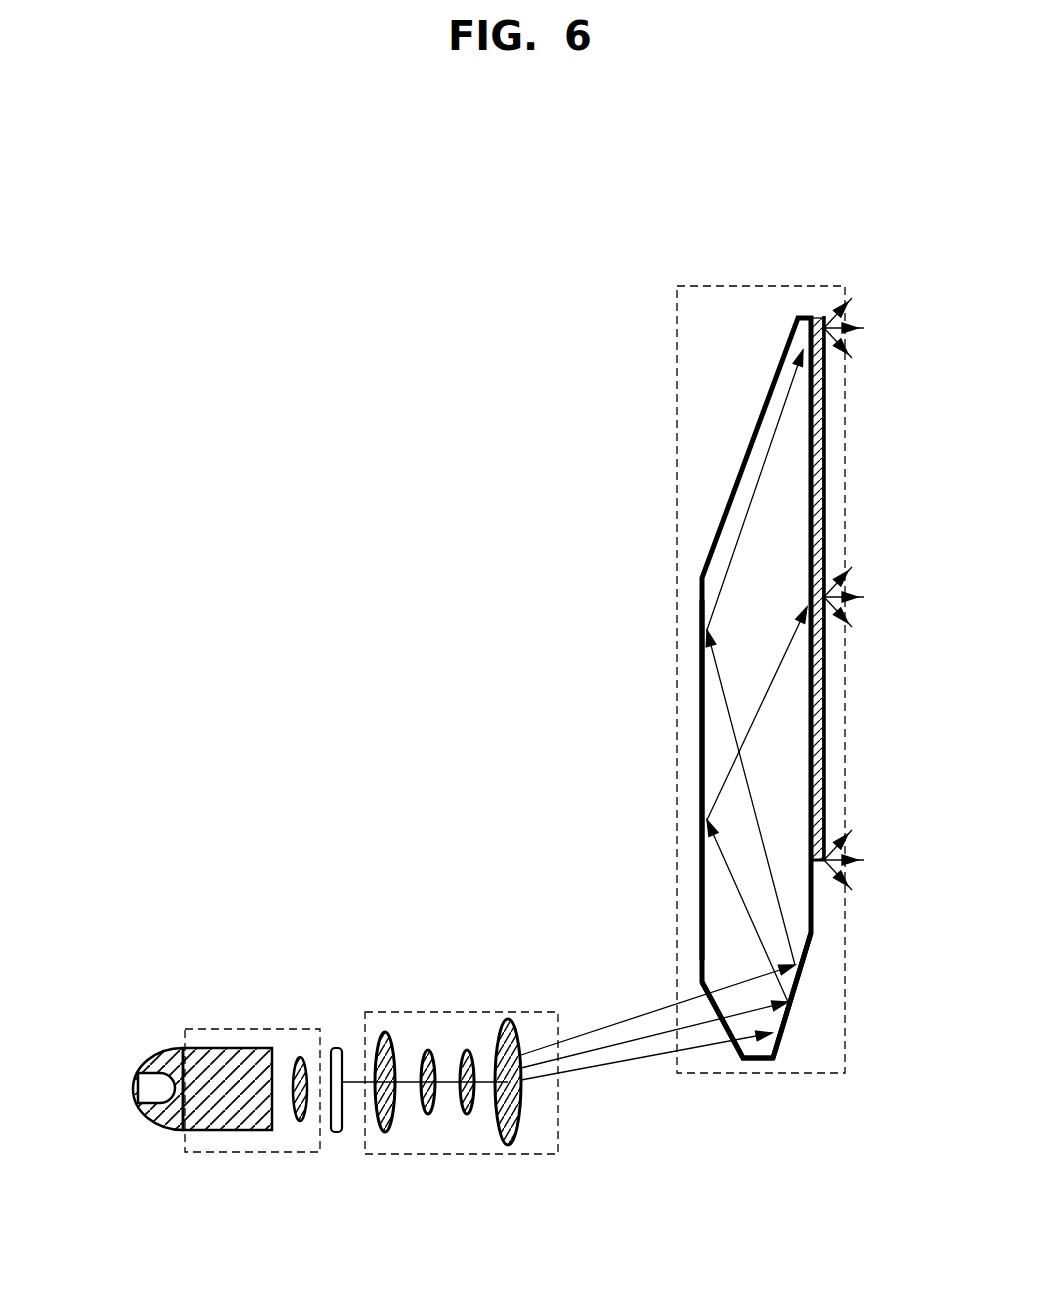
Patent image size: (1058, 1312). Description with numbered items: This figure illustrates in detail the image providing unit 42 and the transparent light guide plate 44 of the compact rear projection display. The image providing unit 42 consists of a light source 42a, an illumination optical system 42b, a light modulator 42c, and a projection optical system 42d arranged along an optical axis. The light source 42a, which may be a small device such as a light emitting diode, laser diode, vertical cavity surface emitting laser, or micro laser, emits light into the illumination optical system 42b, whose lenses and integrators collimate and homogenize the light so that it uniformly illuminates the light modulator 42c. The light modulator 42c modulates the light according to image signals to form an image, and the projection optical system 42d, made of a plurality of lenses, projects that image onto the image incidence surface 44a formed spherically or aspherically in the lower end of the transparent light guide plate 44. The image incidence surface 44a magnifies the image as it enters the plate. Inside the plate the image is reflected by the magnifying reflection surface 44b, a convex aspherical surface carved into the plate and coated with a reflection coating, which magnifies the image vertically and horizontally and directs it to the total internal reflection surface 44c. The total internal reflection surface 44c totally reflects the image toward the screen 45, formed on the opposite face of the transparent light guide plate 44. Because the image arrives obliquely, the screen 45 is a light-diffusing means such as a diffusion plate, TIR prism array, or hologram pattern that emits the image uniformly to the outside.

The image providing unit 42 is at (525, 920).
The light source 42a is at (152, 1090).
The illumination optical system 42b is at (202, 1029).
The light modulator 42c is at (338, 1048).
The projection optical system 42d is at (475, 1012).
The transparent light guide plate 44 is at (677, 512).
The image incidence surface 44a is at (704, 983).
The magnifying reflection surface 44b is at (800, 985).
The total internal reflection surface 44c is at (702, 780).
The screen 45 is at (822, 510).